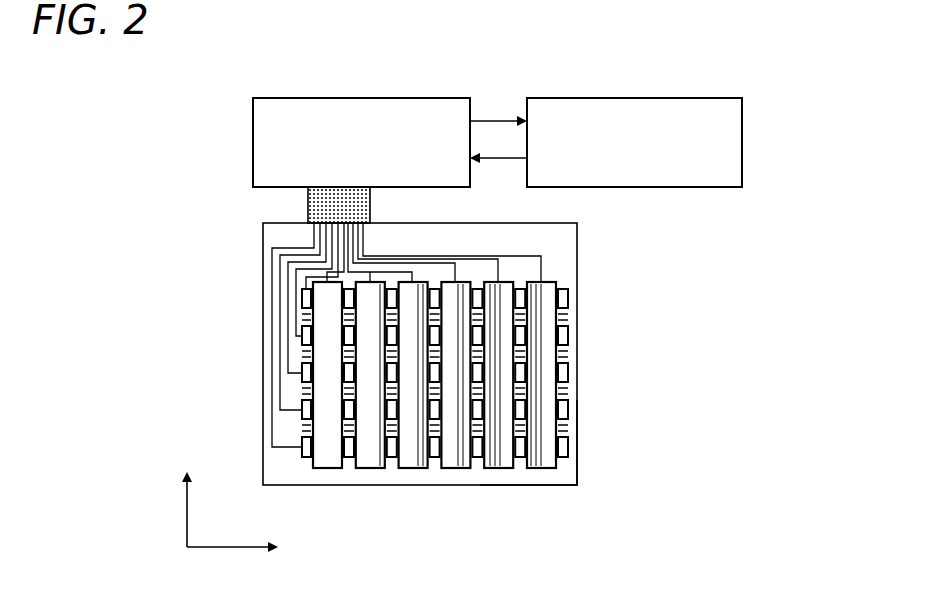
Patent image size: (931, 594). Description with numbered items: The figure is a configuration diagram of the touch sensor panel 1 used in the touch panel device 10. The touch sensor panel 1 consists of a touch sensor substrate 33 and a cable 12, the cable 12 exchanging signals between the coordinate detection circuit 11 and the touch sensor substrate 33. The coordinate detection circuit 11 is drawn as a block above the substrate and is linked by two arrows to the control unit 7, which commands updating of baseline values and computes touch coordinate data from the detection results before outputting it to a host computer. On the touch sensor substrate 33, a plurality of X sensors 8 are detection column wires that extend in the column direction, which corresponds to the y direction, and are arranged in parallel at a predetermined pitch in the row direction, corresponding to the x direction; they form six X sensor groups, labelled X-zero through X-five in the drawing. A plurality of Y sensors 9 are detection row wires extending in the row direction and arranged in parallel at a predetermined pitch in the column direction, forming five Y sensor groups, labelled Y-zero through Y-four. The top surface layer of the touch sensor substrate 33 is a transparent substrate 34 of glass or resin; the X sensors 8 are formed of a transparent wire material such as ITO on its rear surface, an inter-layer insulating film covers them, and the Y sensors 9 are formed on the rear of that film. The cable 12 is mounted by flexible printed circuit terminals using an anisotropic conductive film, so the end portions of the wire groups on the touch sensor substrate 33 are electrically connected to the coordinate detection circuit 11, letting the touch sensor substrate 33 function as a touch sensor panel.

The touch panel device 10 is at (214, 46).
The touch sensor panel 1 is at (249, 214).
The coordinate detection circuit 11 is at (378, 97).
The control unit 7 is at (642, 97).
The cable 12 is at (372, 207).
The touch sensor substrate 33 is at (577, 247).
The transparent substrate 34 is at (572, 486).
The X sensors 8 is at (560, 527).
The Y sensors 9 is at (569, 298).